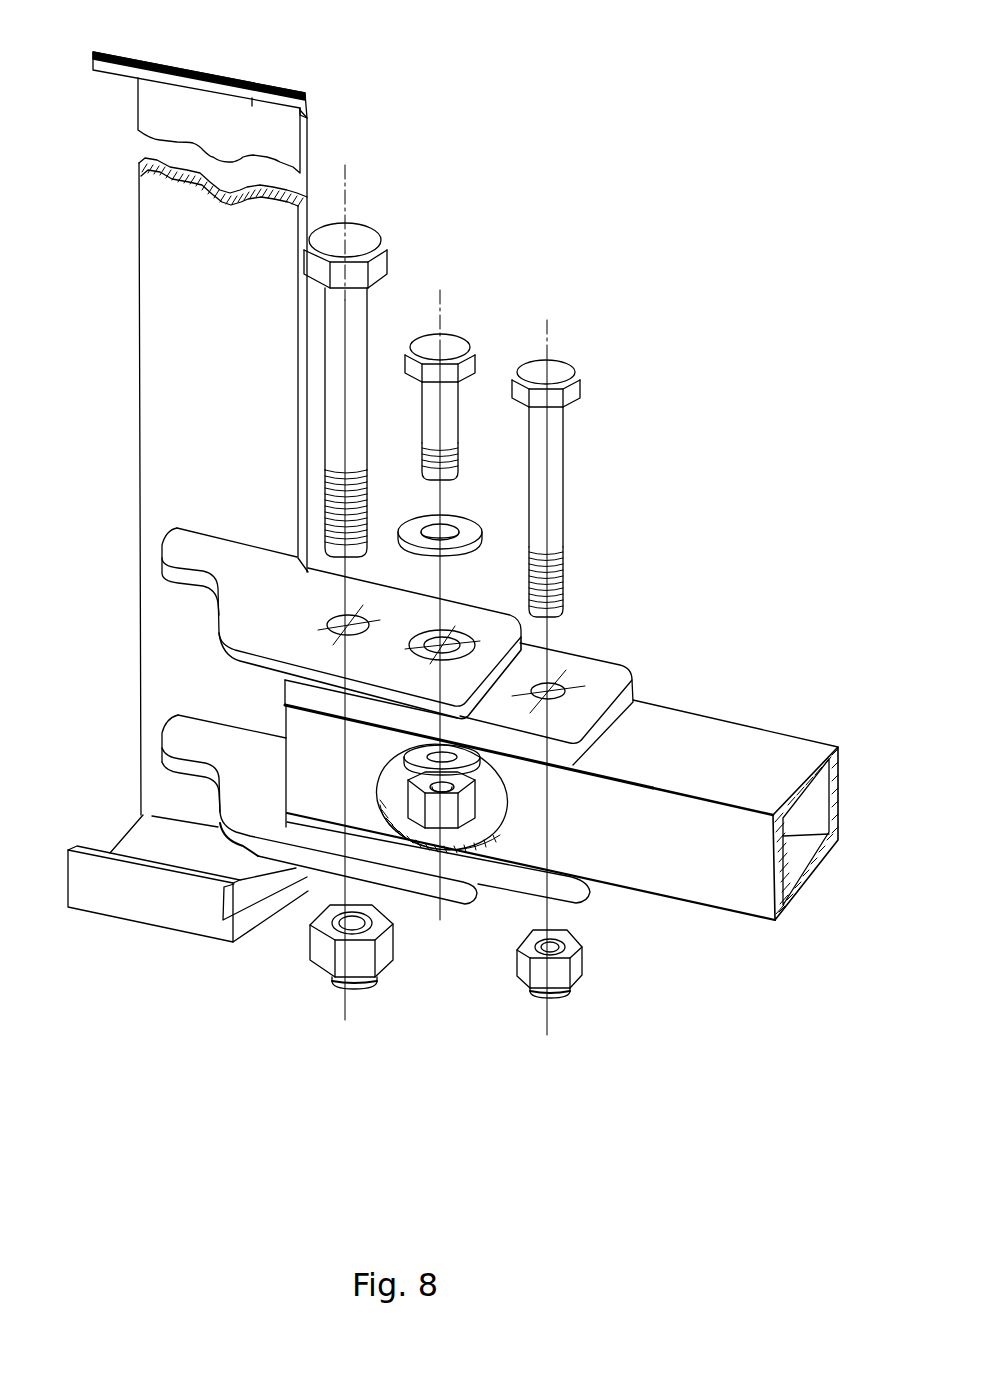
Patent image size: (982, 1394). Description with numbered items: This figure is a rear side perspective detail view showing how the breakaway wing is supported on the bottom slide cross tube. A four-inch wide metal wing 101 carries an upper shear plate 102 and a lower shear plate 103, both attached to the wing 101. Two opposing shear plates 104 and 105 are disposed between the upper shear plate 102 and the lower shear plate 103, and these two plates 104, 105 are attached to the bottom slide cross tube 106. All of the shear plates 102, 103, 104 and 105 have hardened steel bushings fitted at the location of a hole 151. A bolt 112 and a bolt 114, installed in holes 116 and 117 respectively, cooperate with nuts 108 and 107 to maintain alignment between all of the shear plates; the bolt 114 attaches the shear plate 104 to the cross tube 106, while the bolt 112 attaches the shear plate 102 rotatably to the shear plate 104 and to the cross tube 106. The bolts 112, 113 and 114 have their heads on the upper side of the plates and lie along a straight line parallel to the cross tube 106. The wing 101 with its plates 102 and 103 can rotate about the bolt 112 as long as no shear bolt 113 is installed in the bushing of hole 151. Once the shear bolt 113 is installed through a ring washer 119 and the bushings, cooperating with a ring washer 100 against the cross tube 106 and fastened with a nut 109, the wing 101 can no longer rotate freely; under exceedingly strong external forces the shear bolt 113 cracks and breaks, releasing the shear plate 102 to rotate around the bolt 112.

The ring washer 100 is at (487, 770).
The metal breakaway wing 101 is at (303, 92).
The upper shear plate 102 is at (218, 525).
The lower shear plate 103 is at (178, 727).
The shear plate 104 is at (287, 697).
The shear plate 105 is at (280, 818).
The bottom slide cross tube 106 is at (755, 760).
The nut 107 is at (528, 970).
The nut 108 is at (326, 965).
The nut 109 is at (477, 810).
The bolt 112 is at (383, 237).
The shear bolt 113 is at (463, 340).
The bolt 114 is at (578, 365).
The hole 116 is at (340, 622).
The hole 117 is at (562, 688).
The ring washer 119 is at (450, 520).
The hole 151 is at (430, 640).